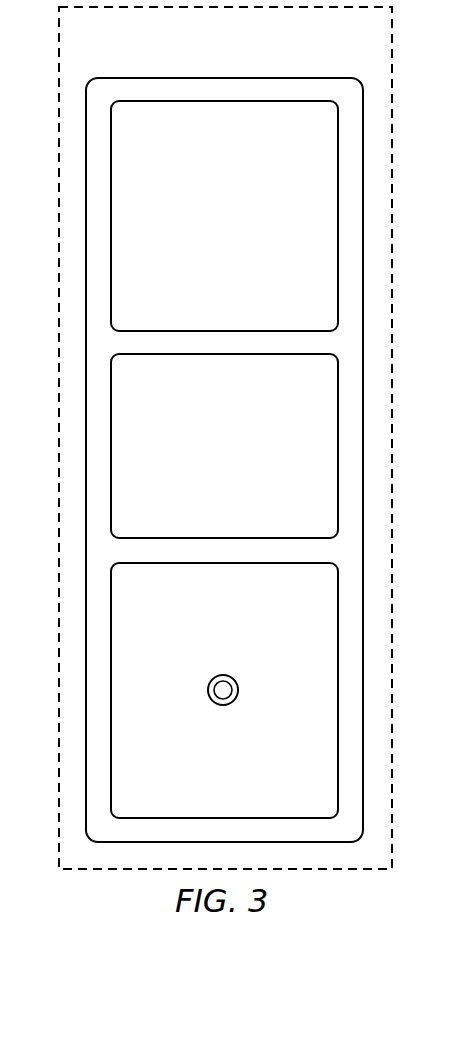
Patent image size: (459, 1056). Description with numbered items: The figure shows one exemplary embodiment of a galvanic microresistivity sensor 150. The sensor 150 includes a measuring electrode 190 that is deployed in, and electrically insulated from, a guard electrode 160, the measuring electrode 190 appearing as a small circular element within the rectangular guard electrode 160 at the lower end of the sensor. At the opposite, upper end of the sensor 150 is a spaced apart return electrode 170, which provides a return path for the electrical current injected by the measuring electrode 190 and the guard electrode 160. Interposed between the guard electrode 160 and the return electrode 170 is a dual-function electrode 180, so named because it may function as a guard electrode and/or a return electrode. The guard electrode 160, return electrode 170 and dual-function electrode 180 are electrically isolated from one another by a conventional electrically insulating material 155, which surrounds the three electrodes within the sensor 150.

The galvanic microresistivity sensor 150 is at (274, 66).
The electrically insulating material 155 is at (108, 88).
The guard electrode 160 is at (243, 634).
The return electrode 170 is at (243, 230).
The dual-function electrode 180 is at (243, 459).
The measuring electrode 190 is at (225, 705).